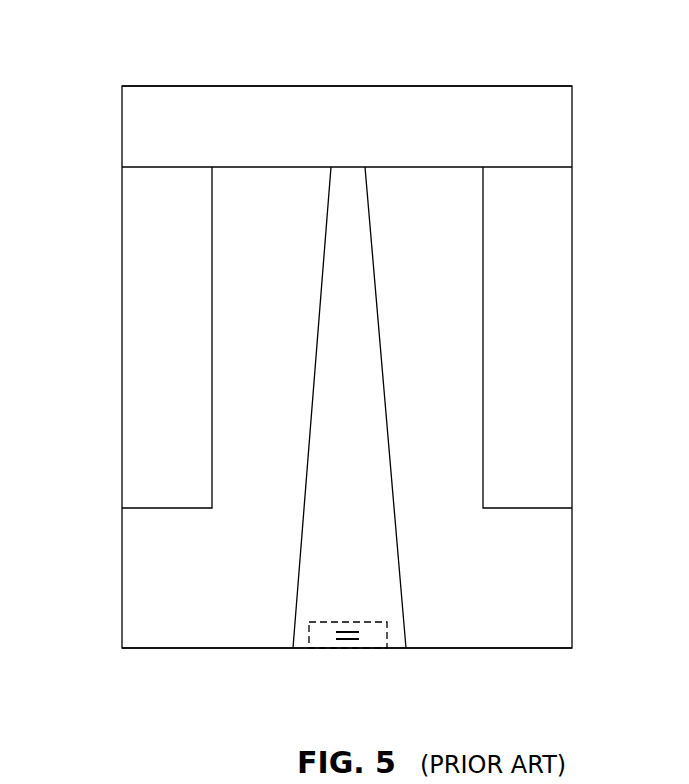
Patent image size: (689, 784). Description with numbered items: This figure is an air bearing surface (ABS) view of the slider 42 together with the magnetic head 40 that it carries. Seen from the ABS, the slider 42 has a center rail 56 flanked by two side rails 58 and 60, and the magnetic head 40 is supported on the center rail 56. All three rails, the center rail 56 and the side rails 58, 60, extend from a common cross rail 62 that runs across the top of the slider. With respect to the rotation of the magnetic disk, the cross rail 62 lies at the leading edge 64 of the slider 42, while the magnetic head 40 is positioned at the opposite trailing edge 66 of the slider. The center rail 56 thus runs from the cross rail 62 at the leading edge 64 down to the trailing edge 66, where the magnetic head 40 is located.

The magnetic head 40 is at (327, 648).
The slider 42 is at (118, 599).
The center rail 56 is at (332, 281).
The side rail 58 is at (138, 246).
The side rail 60 is at (556, 250).
The cross rail 62 is at (268, 100).
The leading edge 64 is at (450, 87).
The trailing edge 66 is at (471, 650).